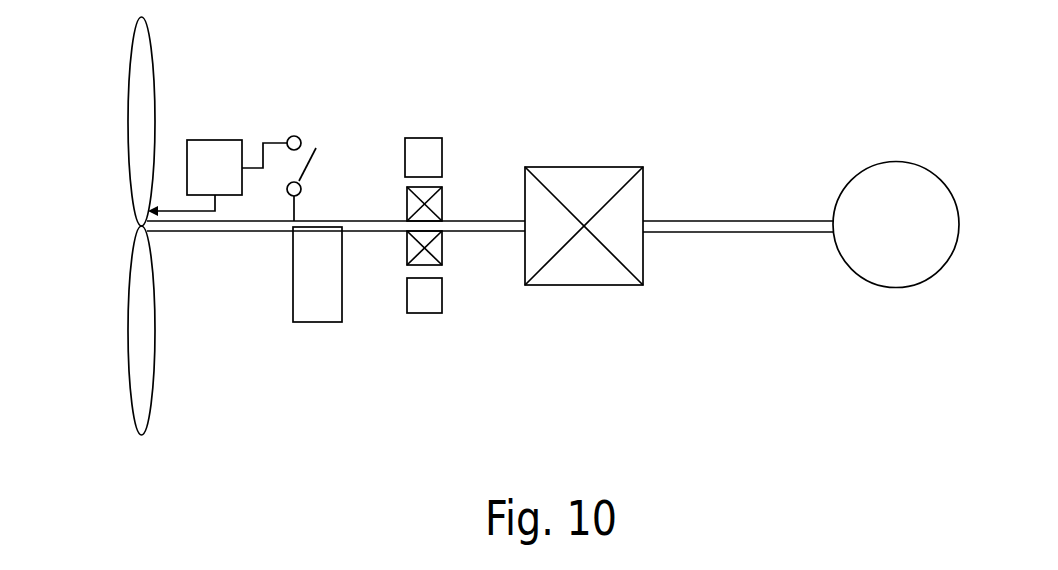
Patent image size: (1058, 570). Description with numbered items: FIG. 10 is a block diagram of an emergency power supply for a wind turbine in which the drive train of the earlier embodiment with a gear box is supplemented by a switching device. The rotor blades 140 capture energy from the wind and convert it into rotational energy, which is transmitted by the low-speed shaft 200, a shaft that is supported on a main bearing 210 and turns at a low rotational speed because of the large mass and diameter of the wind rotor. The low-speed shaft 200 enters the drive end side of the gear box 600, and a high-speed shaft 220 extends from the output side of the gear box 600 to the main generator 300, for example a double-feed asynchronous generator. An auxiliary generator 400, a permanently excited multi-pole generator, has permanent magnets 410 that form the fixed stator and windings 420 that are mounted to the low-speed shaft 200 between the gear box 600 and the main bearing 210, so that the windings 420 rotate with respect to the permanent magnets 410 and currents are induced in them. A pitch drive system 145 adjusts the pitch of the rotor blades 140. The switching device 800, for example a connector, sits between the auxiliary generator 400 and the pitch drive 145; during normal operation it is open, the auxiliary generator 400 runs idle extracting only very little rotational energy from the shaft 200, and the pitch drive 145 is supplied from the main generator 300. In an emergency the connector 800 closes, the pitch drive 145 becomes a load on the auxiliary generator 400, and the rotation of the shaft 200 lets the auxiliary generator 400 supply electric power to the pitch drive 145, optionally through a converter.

The rotor blades 140 is at (130, 66).
The pitch drive system 145 is at (222, 140).
The switching device 800 is at (320, 126).
The low-speed shaft 200 is at (238, 231).
The main bearing 210 is at (310, 322).
The auxiliary generator 400 is at (451, 219).
The permanent magnets 410 is at (423, 313).
The windings 420 is at (442, 252).
The gear box 600 is at (582, 167).
The high-speed shaft 220 is at (735, 221).
The main generator 300 is at (895, 162).